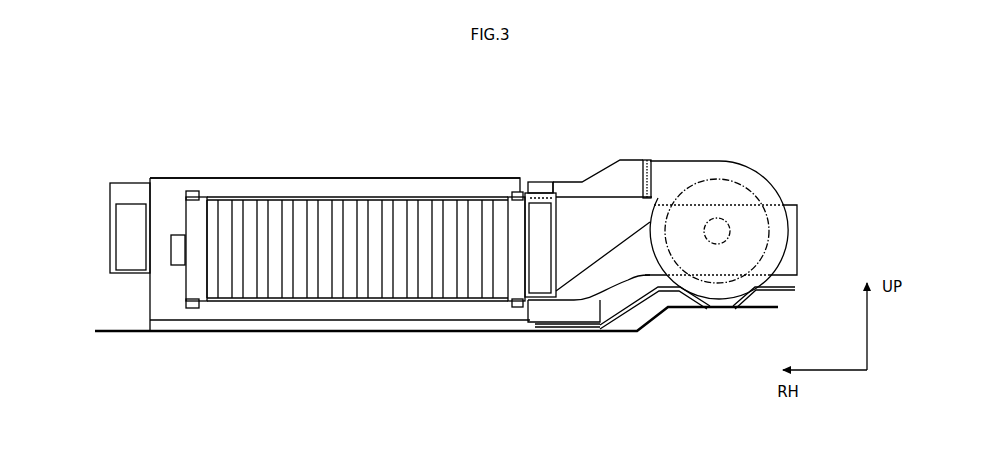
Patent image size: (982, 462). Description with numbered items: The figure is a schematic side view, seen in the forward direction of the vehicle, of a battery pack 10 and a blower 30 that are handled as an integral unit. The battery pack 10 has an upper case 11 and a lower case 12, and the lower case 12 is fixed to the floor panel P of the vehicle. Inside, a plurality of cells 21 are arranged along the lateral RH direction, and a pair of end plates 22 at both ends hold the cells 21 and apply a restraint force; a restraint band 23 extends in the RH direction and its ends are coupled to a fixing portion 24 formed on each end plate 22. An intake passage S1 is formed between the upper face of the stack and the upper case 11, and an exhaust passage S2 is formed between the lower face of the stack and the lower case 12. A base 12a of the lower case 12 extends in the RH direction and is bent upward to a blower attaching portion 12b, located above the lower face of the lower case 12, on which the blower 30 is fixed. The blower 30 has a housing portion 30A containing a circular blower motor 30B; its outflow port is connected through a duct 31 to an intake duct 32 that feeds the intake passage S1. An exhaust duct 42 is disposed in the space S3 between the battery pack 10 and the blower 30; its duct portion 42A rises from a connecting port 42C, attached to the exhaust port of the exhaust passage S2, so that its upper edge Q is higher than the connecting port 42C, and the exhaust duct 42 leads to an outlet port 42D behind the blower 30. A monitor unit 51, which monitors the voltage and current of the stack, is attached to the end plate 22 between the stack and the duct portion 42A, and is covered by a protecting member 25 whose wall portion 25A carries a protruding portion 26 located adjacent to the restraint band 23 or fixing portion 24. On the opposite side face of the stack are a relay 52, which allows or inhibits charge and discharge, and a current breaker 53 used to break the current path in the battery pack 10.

The battery pack 10 is at (346, 155).
The upper case 11 is at (296, 178).
The lower case 12 is at (268, 322).
The base 12a is at (643, 309).
The blower attaching portion 12b is at (671, 289).
The cell 21 is at (410, 212).
The end plate 22 is at (192, 213).
The restraint band 23 is at (237, 197).
The fixing portion 24 is at (194, 192).
The protecting member 25 is at (538, 281).
The wall portion 25A is at (545, 200).
The protruding portion 26 is at (538, 197).
The blower 30 is at (745, 206).
The housing portion 30A is at (783, 187).
The blower motor 30B is at (722, 177).
The duct 31 is at (657, 168).
The intake duct 32 is at (605, 166).
The exhaust duct 42 is at (606, 249).
The duct portion 42A is at (617, 290).
The connecting port 42C is at (553, 310).
The outlet port 42D is at (800, 242).
The monitor unit 51 is at (535, 297).
The relay 52 is at (178, 243).
The current breaker 53 is at (122, 243).
The intake passage S1 is at (452, 185).
The exhaust passage S2 is at (420, 320).
The space S3 is at (618, 218).
The floor panel P is at (161, 332).
The upper edge Q is at (598, 275).